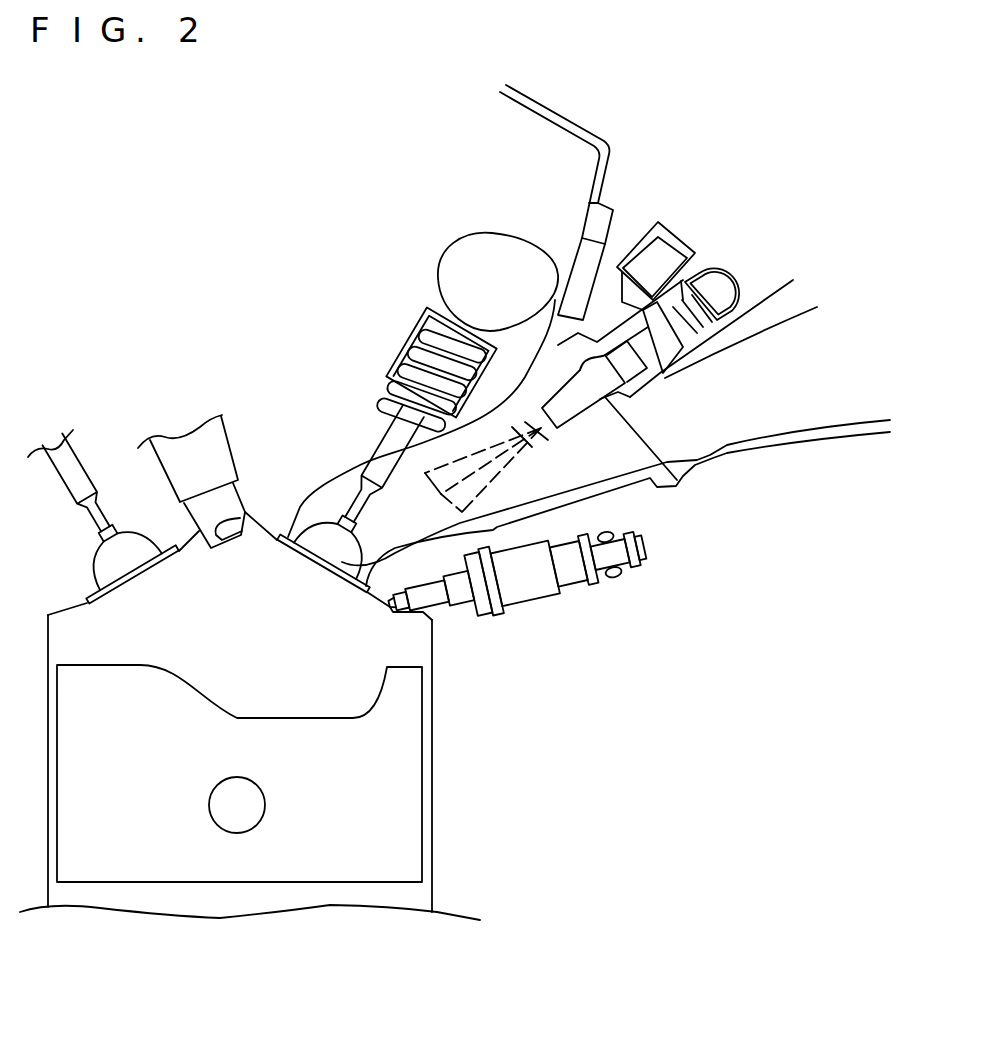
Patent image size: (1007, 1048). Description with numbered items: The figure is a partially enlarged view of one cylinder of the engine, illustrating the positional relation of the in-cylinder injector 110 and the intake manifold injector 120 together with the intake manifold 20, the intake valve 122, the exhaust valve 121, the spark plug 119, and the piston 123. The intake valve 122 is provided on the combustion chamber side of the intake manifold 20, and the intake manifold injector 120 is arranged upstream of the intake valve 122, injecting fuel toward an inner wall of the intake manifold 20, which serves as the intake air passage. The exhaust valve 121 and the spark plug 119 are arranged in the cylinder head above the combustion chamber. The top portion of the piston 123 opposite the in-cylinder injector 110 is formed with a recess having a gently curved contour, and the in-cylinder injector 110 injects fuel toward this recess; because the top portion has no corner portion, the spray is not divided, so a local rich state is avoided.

The intake manifold 20 is at (727, 423).
The in-cylinder injector 110 is at (540, 590).
The spark plug 119 is at (217, 448).
The intake manifold injector 120 is at (582, 404).
The exhaust valve 121 is at (123, 580).
The intake valve 122 is at (294, 556).
The piston 123 is at (338, 865).